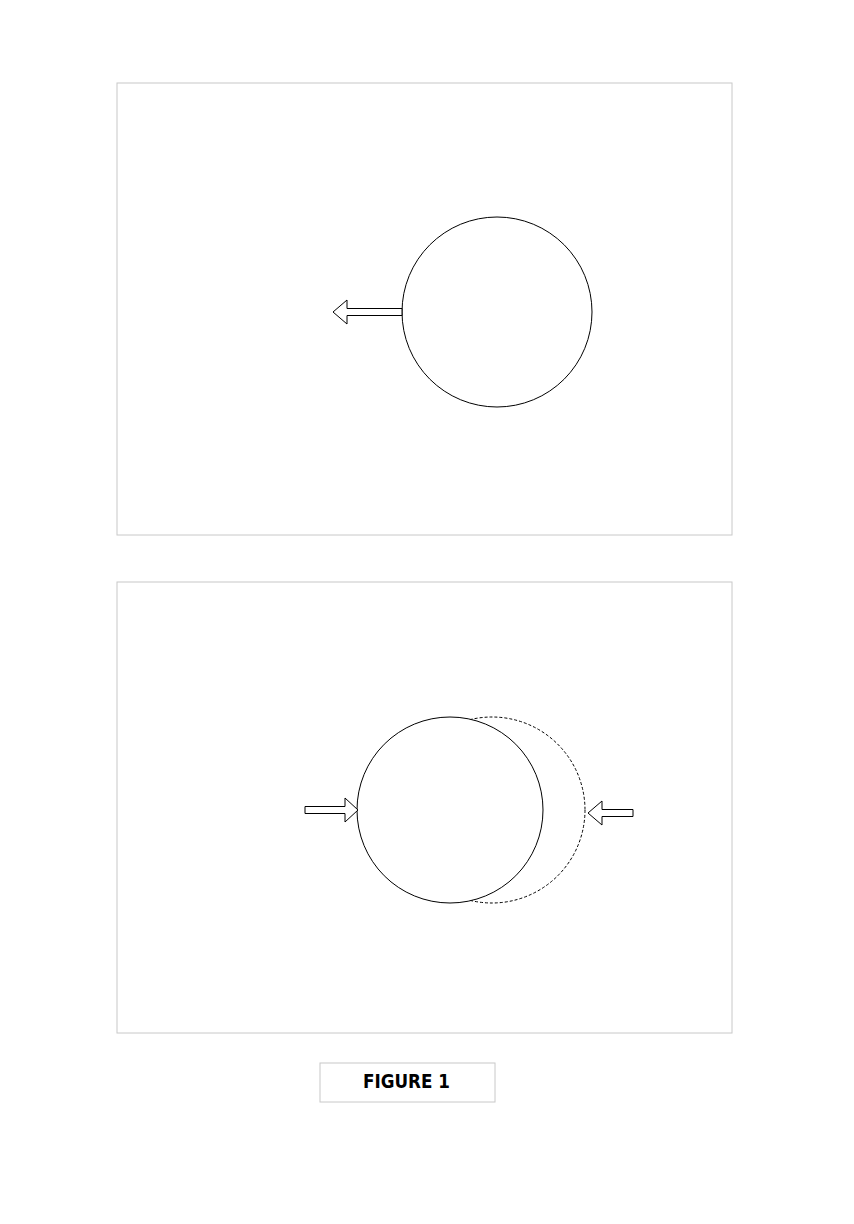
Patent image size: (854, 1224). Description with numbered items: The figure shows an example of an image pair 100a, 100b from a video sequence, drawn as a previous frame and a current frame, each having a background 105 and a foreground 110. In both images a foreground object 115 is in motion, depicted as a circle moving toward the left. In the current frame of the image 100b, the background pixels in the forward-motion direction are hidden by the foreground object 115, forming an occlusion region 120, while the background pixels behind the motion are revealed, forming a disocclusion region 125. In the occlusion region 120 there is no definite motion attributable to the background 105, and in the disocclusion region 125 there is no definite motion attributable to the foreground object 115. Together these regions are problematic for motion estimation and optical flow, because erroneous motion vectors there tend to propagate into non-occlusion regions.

The image 100a is at (645, 83).
The image 100b is at (662, 1035).
The background 105 is at (690, 287).
The foreground 110 is at (570, 272).
The foreground object 115 is at (557, 350).
The occlusion region 120 is at (370, 768).
The disocclusion region 125 is at (540, 877).